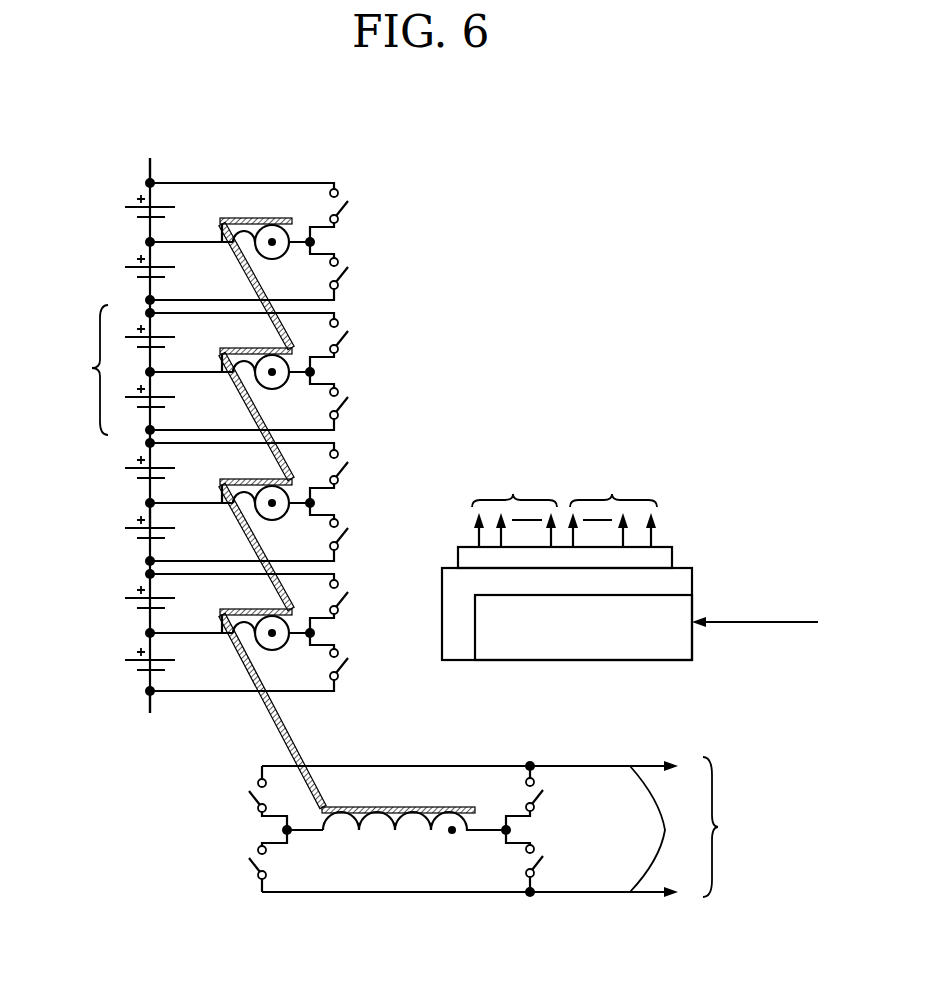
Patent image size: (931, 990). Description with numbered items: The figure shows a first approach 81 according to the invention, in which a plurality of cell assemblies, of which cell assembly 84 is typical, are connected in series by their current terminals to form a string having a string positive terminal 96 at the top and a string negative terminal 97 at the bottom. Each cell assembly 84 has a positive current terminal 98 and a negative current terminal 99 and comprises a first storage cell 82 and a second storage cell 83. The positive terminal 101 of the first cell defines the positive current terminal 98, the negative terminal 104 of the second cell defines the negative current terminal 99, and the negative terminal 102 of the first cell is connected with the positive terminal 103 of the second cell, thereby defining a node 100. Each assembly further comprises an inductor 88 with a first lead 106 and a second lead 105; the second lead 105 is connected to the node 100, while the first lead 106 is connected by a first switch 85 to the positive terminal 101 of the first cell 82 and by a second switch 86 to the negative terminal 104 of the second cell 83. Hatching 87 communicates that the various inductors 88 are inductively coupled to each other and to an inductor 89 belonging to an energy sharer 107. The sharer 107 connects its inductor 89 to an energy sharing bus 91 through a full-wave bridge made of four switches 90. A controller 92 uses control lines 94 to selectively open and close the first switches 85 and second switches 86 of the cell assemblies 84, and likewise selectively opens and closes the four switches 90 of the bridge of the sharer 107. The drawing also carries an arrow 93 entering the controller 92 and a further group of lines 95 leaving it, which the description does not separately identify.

The first approach 81 is at (445, 125).
The first storage cell 82 is at (126, 207).
The second storage cell 83 is at (126, 268).
The cell assembly 84 is at (92, 368).
The first switch 85 is at (348, 204).
The second switch 86 is at (348, 272).
The hatching 87 is at (270, 312).
The inductor 88 is at (258, 253).
The inductor 89 is at (362, 832).
The switches 90 is at (250, 857).
The energy sharing bus 91 is at (481, 829).
The controller 92 is at (603, 660).
The input 93 is at (752, 622).
The control lines 94 is at (513, 494).
The output group 95 is at (612, 494).
The string positive terminal 96 is at (150, 168).
The string negative terminal 97 is at (150, 706).
The positive current terminal 98 is at (152, 316).
The negative current terminal 99 is at (152, 430).
The node 100 is at (153, 373).
The positive terminal of the first cell 101 is at (152, 457).
The negative terminal of the first cell 102 is at (153, 498).
The positive terminal of the second cell 103 is at (153, 511).
The negative terminal of the second cell 104 is at (153, 554).
The second lead 105 is at (193, 633).
The first lead 106 is at (300, 634).
The energy sharer 107 is at (716, 828).